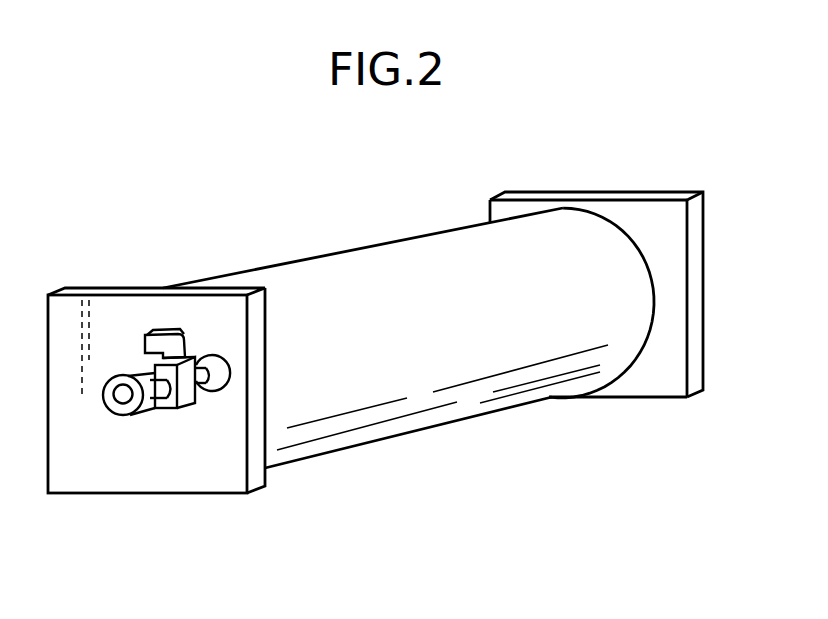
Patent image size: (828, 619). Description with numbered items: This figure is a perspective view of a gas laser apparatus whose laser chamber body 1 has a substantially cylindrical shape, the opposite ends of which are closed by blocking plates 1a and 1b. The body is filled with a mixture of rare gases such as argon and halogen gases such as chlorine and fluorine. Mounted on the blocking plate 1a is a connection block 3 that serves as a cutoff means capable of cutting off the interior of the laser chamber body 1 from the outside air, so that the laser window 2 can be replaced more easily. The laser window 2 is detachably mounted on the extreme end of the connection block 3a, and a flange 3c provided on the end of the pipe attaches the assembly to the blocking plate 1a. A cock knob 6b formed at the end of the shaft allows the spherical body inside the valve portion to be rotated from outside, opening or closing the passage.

The laser chamber body 1 is at (408, 382).
The blocking plate 1a is at (72, 478).
The blocking plate 1b is at (672, 370).
The laser window 2 is at (110, 412).
The connection block 3 is at (126, 312).
The connection block 3a is at (163, 408).
The flange 3c is at (233, 393).
The cock knob 6b is at (167, 343).